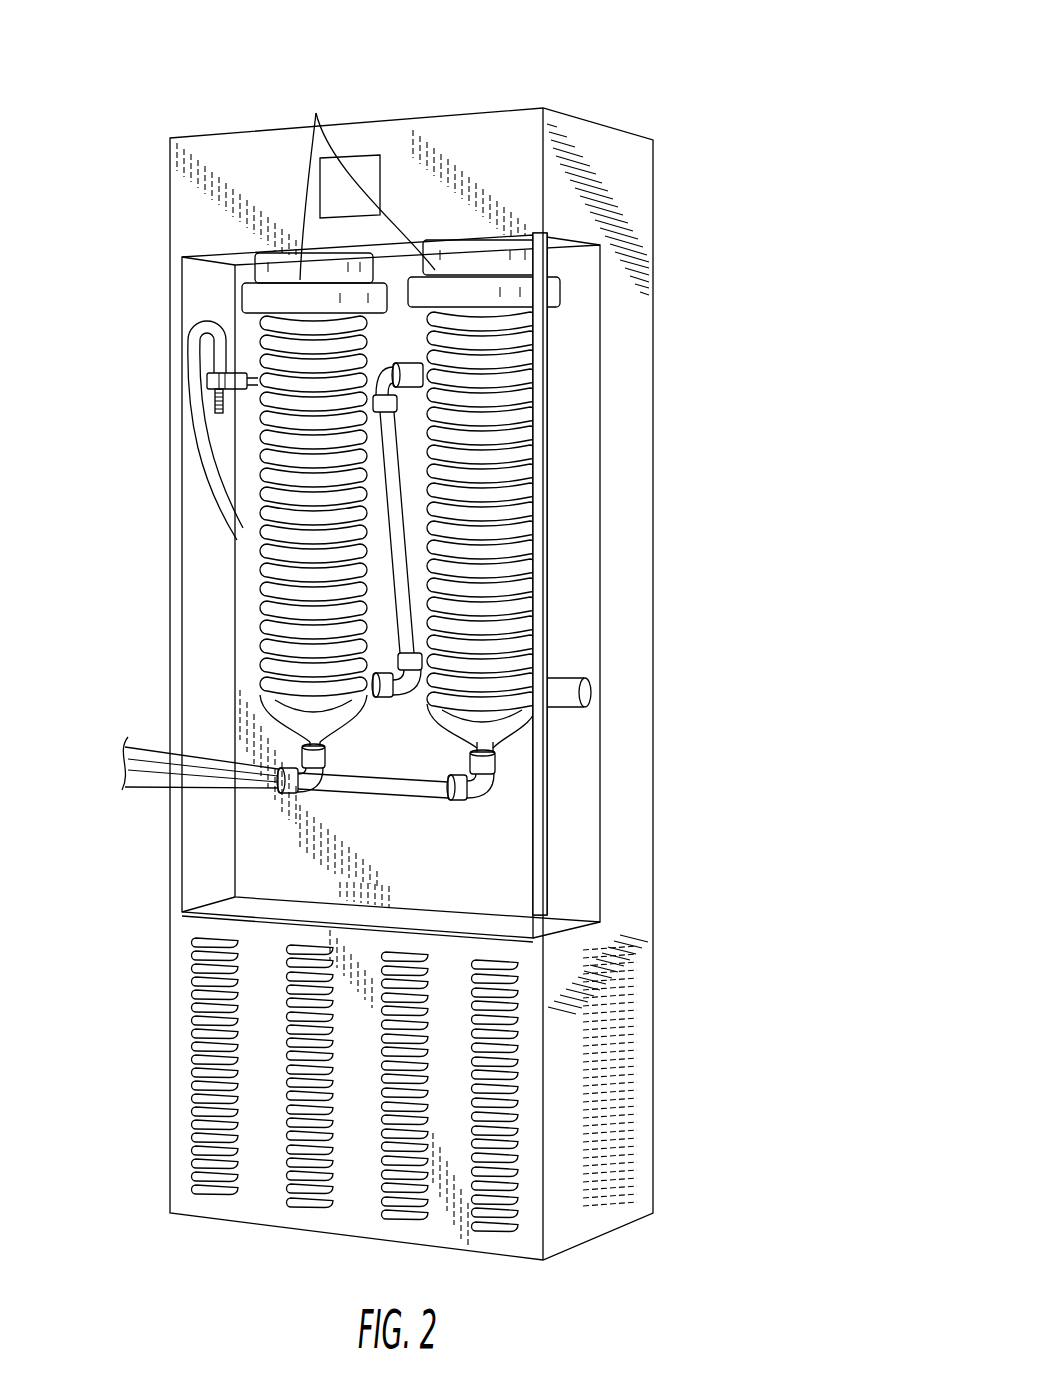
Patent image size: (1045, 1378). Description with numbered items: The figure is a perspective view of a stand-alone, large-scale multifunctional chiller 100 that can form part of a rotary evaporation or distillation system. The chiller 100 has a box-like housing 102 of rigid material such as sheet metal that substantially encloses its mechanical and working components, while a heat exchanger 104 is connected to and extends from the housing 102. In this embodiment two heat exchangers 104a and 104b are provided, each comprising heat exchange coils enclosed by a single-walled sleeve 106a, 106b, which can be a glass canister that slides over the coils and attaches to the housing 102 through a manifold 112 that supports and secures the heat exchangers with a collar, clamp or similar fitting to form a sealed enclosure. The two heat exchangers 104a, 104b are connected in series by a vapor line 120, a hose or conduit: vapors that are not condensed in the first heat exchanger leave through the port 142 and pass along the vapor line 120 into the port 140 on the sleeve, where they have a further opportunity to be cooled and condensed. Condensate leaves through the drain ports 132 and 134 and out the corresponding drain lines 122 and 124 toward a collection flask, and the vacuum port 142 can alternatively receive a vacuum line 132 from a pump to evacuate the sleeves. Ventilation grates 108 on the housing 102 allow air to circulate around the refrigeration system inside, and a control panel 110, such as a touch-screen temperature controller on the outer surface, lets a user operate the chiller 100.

The chiller 100 is at (708, 77).
The housing 102 is at (640, 810).
The heat exchanger 104 is at (409, 574).
The first heat exchanger 104a is at (411, 494).
The second heat exchanger 104b is at (235, 497).
The first sleeve 106a is at (427, 440).
The second sleeve 106b is at (265, 493).
The ventilation grates 108 is at (193, 1127).
The control panel 110 is at (362, 163).
The manifold 112 is at (367, 178).
The vapor line 120 is at (402, 556).
The drain line 122 is at (361, 790).
The drain line 124 is at (197, 787).
The port 132 is at (193, 352).
The drain port 134 is at (324, 742).
The port 140 is at (591, 692).
The vacuum port 142 is at (243, 386).